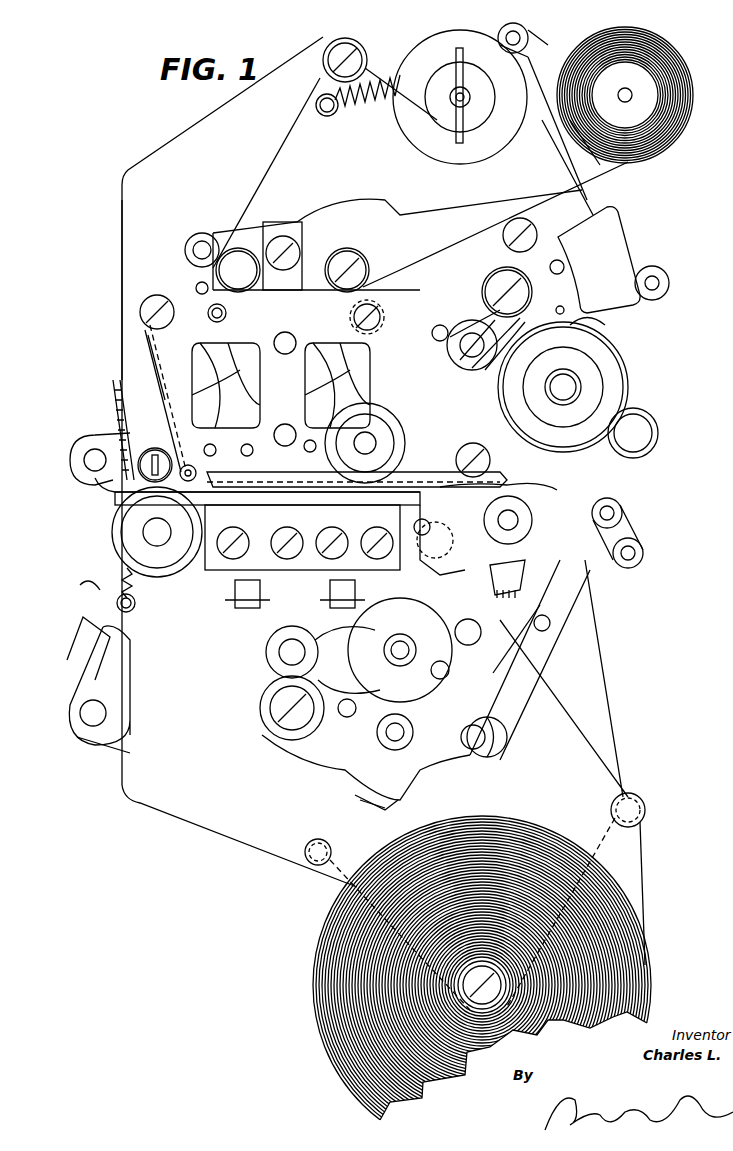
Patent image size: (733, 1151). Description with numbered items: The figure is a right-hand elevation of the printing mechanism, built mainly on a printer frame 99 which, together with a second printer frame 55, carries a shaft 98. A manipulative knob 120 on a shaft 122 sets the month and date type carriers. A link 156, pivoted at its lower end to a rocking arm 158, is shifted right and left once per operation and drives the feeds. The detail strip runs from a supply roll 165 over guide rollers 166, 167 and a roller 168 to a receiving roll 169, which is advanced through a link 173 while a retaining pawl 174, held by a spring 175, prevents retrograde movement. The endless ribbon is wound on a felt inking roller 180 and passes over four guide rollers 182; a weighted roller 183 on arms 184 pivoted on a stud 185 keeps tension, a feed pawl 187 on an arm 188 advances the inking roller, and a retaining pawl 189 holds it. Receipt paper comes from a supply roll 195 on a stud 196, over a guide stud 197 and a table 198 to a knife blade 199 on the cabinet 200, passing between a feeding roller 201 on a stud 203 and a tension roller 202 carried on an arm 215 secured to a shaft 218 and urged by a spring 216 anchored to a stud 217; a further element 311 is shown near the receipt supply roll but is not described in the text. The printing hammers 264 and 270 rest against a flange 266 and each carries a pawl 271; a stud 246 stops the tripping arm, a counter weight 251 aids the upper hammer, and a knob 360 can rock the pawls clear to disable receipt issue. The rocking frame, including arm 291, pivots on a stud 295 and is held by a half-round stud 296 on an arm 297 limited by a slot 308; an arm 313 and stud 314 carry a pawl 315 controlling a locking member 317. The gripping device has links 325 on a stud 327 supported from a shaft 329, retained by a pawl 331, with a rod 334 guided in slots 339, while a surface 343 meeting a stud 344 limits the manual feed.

The printer frame 55 is at (150, 345).
The shaft 98 is at (214, 320).
The printer frame 99 is at (122, 282).
The manipulative knob 120 is at (340, 460).
The shaft 122 is at (368, 452).
The link 156 is at (122, 660).
The rocking arm 158 is at (118, 752).
The supply roll 165 is at (682, 120).
The guide roller 166 is at (352, 260).
The guide roller 167 is at (240, 266).
The roller 168 is at (348, 52).
The receiving roll 169 is at (445, 78).
The link 173 is at (566, 160).
The retaining pawl 174 is at (385, 108).
The spring 175 is at (343, 112).
The felt inking roller 180 is at (628, 388).
The guide rollers 182 is at (157, 304).
The weighted roller 183 is at (452, 372).
The arms 184 is at (480, 308).
The stud 185 is at (495, 272).
The feed pawl 187 is at (590, 330).
The arm 188 is at (655, 312).
The retaining pawl 189 is at (652, 420).
The supply roll 195 is at (640, 962).
The stud 196 is at (492, 1005).
The guide stud 197 is at (641, 812).
The table 198 is at (117, 502).
The knife blade 199 is at (95, 478).
The cabinet 200 is at (118, 405).
The feeding roller 201 is at (112, 532).
The tension roller 202 is at (158, 440).
The stud 203 is at (160, 548).
The arm 215 is at (80, 445).
The spring 216 is at (132, 600).
The stud 217 is at (133, 612).
The shaft 218 is at (86, 460).
The stud 246 is at (455, 498).
The counter weight 251 is at (624, 236).
The hammer 264 is at (483, 548).
The flange 266 is at (484, 518).
The hammer 270 is at (262, 582).
The pawl 271 is at (448, 608).
The arm 291 is at (499, 679).
The stud 295 is at (288, 726).
The half-round stud 296 is at (479, 750).
The arm 297 is at (495, 742).
The slot 308 is at (497, 729).
The pulley 311 is at (325, 830).
The arm 313 is at (345, 632).
The stud 314 is at (298, 642).
The pawl 315 is at (88, 582).
The locking member 317 is at (80, 640).
The links 325 is at (495, 648).
The stud 327 is at (404, 732).
The shaft 329 is at (347, 718).
The pawl 331 is at (398, 802).
The rod 334 is at (560, 565).
The guiding slots 339 is at (527, 580).
The surface 343 is at (487, 652).
The stud 344 is at (468, 622).
The knob 360 is at (440, 662).